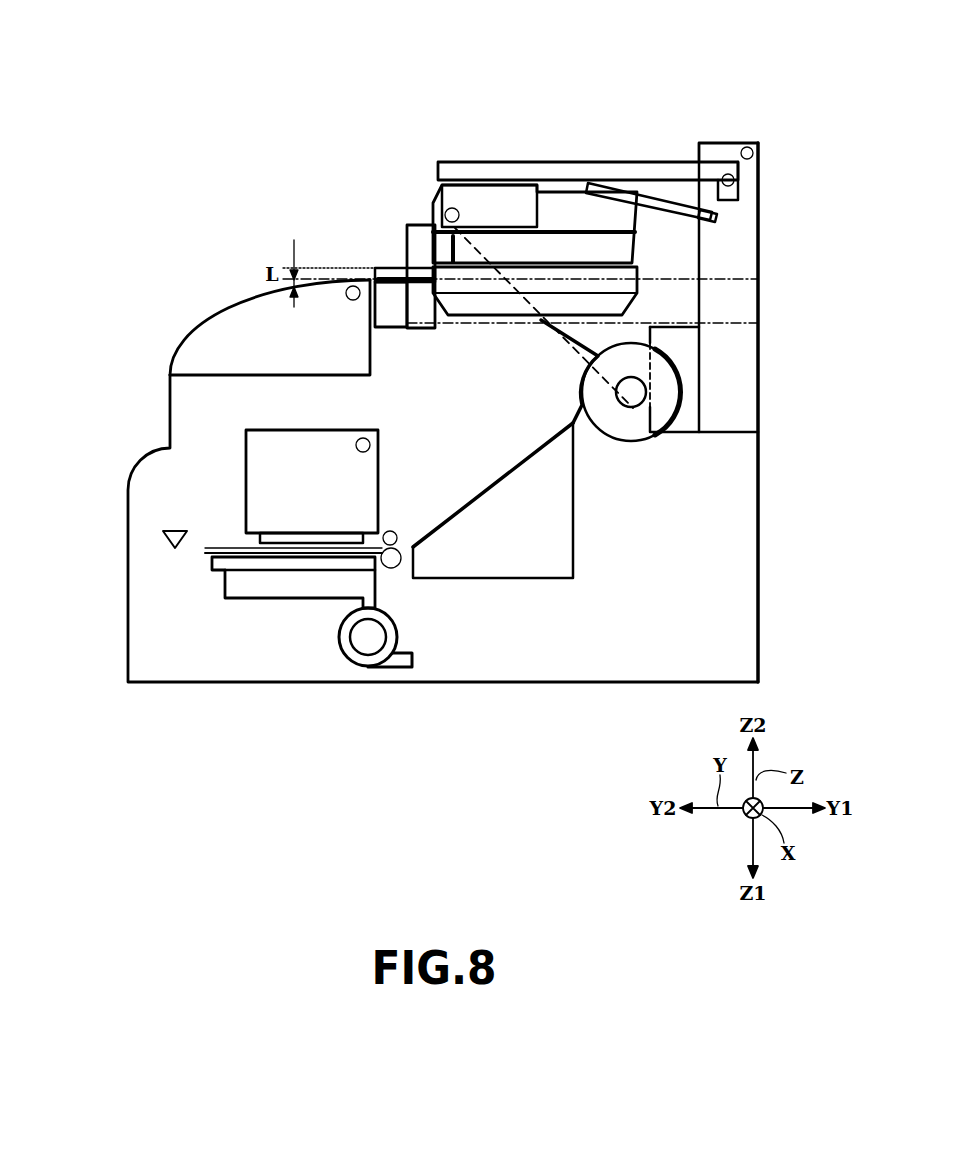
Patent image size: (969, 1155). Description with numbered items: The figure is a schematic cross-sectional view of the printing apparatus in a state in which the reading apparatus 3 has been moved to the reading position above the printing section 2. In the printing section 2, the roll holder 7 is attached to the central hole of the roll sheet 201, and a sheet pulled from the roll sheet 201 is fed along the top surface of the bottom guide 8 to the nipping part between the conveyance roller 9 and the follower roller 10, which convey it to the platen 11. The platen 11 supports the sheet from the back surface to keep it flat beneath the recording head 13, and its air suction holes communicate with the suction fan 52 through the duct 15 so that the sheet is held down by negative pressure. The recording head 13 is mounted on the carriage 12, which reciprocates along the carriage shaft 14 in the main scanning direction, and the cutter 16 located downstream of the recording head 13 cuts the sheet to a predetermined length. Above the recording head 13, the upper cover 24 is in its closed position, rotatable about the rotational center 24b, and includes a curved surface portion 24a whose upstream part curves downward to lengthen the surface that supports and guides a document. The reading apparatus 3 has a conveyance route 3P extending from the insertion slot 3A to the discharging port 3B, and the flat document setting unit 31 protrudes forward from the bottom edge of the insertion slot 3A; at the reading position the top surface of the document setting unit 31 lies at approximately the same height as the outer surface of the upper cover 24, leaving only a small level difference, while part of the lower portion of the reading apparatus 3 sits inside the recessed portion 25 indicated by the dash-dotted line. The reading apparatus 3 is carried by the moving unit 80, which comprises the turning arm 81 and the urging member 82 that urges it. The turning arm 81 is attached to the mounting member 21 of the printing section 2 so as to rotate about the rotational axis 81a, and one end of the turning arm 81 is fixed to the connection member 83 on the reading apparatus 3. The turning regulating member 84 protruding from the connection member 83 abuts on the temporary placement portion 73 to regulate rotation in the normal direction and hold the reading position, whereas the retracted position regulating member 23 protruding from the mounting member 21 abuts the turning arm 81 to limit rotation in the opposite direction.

The printing section 2 is at (112, 457).
The reading apparatus 3 is at (523, 229).
The insertion slot 3A is at (443, 270).
The discharging port 3B is at (633, 258).
The conveyance route 3P is at (531, 265).
The roll holder 7 is at (631, 410).
The bottom guide 8 is at (532, 562).
The conveyance roller 9 is at (400, 552).
The follower roller 10 is at (388, 531).
The platen 11 is at (217, 565).
The carriage 12 is at (295, 468).
The recording head 13 is at (295, 532).
The carriage shaft 14 is at (364, 438).
The duct 15 is at (290, 587).
The cutter 16 is at (166, 532).
The mounting member 21 is at (735, 235).
The retracted position regulating member 23 is at (745, 149).
The upper cover 24 is at (225, 319).
The curved surface portion 24a is at (183, 340).
The rotational center 24b is at (353, 302).
The recessed portion 25 is at (758, 275).
The document setting unit 31 is at (398, 284).
The suction fan 52 is at (370, 637).
The temporary placement portion 73 is at (417, 247).
The moving unit 80 is at (608, 68).
The turning arm 81 is at (612, 172).
The rotational axis 81a is at (734, 180).
The urging member 82 is at (662, 195).
The connection member 83 is at (500, 192).
The turning regulating member 84 is at (452, 208).
The roll sheet 201 is at (679, 412).